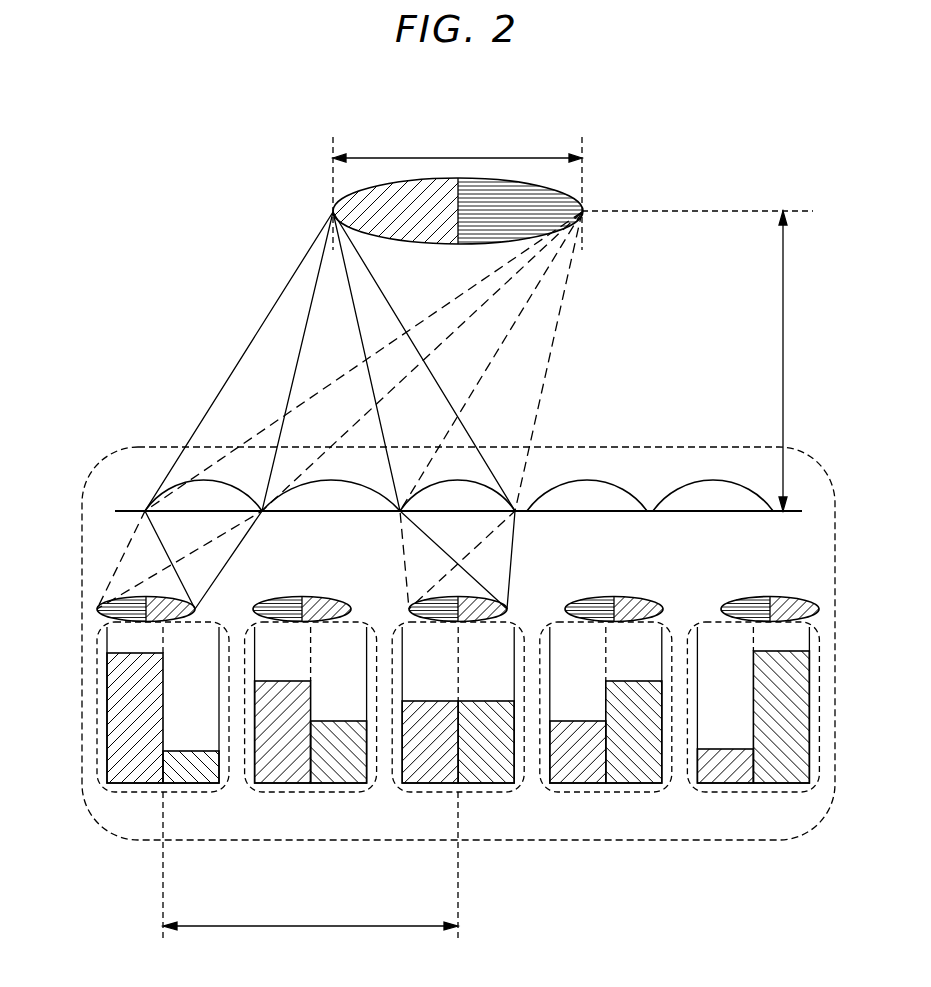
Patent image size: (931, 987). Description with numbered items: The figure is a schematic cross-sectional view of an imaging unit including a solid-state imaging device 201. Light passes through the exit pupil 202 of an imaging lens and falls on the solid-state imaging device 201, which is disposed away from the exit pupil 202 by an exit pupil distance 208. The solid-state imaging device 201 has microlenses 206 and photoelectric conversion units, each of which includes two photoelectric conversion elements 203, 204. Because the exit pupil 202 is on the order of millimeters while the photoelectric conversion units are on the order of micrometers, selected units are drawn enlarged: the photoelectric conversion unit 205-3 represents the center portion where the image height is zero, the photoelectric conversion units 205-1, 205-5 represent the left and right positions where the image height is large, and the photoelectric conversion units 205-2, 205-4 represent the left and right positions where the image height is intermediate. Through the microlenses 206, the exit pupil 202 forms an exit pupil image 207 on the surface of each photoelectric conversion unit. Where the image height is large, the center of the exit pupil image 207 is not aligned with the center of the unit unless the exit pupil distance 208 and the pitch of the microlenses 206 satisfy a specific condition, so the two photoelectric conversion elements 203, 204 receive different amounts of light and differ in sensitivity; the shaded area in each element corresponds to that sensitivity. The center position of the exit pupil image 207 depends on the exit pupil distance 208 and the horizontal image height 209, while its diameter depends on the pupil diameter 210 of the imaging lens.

The solid-state imaging device 201 is at (627, 446).
The exit pupil 202 is at (345, 193).
The photoelectric conversion element 203 is at (136, 787).
The photoelectric conversion element 204 is at (181, 787).
The photoelectric conversion unit 205-1 is at (186, 753).
The photoelectric conversion unit 205-2 is at (308, 791).
The photoelectric conversion unit 205-3 is at (473, 793).
The photoelectric conversion unit 205-4 is at (603, 793).
The photoelectric conversion unit 205-5 is at (750, 793).
The microlens 206 is at (178, 483).
The exit pupil image 207 is at (193, 613).
The exit pupil distance 208 is at (781, 371).
The horizontal image height 209 is at (312, 928).
The pupil diameter 210 is at (460, 157).